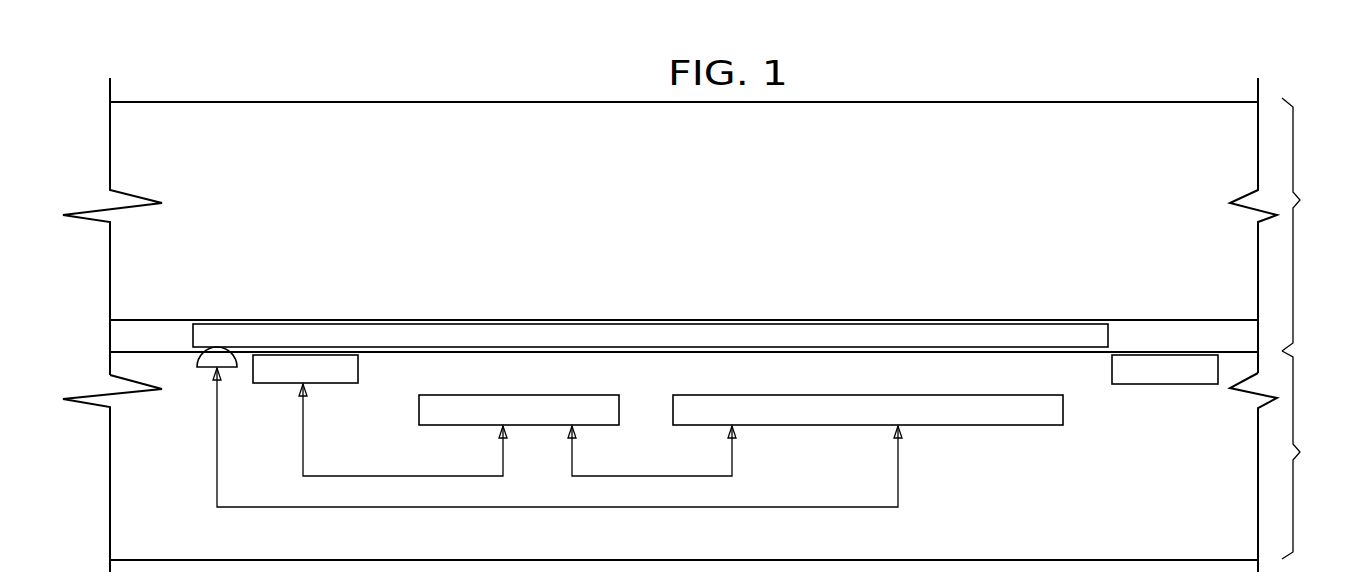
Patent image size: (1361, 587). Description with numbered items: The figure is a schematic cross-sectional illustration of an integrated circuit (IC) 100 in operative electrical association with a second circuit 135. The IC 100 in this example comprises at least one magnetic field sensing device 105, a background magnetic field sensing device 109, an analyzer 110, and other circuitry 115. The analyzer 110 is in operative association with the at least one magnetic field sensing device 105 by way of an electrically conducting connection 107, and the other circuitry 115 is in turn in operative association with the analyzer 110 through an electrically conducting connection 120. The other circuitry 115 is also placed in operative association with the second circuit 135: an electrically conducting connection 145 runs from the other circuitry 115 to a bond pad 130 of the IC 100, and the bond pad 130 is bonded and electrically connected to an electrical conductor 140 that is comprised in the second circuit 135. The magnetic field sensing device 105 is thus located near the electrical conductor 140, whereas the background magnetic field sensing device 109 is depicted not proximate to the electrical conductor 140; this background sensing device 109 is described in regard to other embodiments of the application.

The integrated circuit 100 is at (702, 461).
The magnetic field sensing device 105 is at (270, 384).
The electrically conducting connection 107 is at (538, 457).
The background magnetic field sensing device 109 is at (1197, 385).
The analyzer 110 is at (438, 426).
The other circuitry 115 is at (998, 426).
The electrically conducting connection 120 is at (732, 457).
The bond pad 130 is at (203, 368).
The second circuit 135 is at (701, 226).
The electrical conductor 140 is at (608, 335).
The electrically conducting connection 145 is at (898, 477).